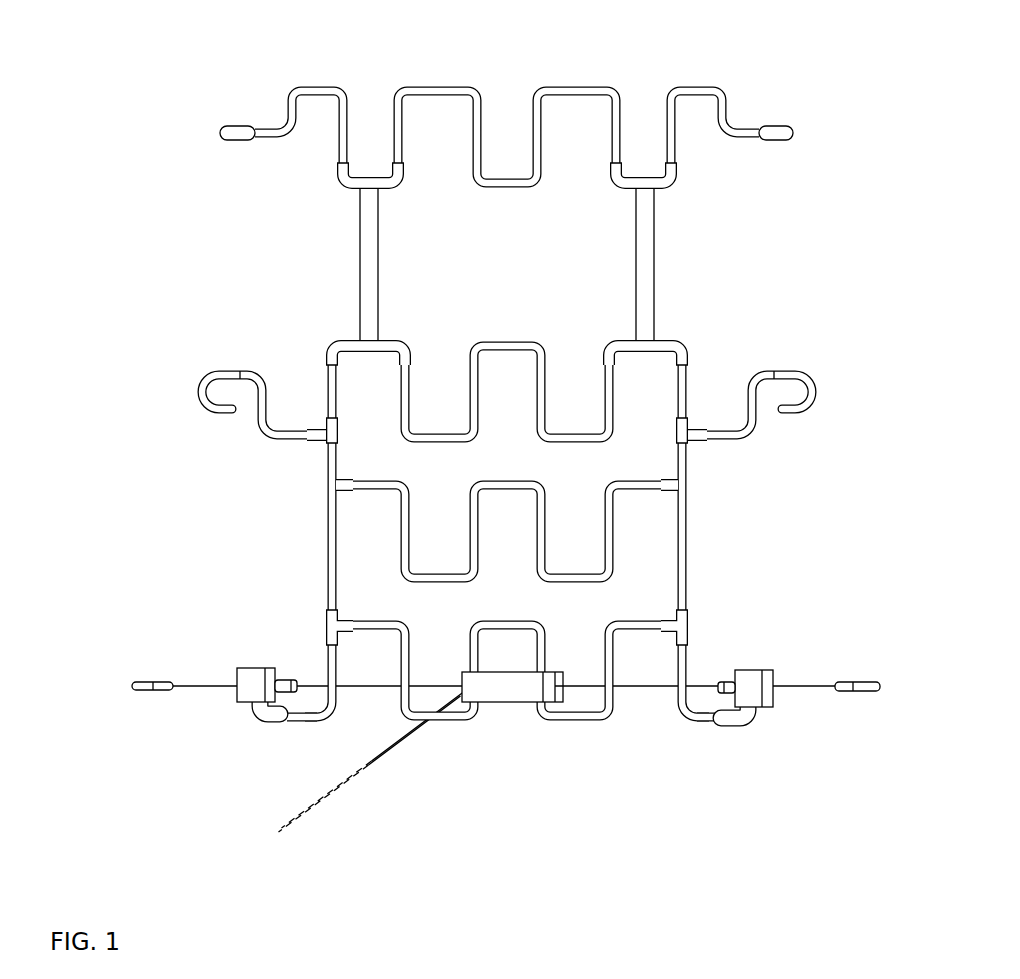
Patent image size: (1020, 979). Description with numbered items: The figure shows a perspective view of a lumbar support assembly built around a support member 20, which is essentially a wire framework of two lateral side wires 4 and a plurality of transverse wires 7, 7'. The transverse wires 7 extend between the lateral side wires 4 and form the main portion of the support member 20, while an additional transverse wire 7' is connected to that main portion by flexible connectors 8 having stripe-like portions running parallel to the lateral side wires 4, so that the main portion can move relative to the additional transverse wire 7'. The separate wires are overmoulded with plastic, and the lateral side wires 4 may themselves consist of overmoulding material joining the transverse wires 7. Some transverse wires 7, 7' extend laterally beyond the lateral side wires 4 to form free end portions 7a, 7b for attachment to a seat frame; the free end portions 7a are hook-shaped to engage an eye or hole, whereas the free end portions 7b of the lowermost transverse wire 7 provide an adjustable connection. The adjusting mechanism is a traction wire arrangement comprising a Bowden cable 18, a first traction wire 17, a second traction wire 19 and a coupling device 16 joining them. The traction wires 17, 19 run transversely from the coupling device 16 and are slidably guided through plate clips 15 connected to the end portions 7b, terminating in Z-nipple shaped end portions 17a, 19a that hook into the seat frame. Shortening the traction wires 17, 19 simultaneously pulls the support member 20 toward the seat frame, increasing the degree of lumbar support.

The support member 20 is at (160, 216).
The additional transverse wire 7' is at (507, 94).
The transverse wires 7 is at (507, 483).
The free end portions 7a is at (232, 132).
The free end portions 7b is at (312, 714).
The flexible connectors 8 is at (368, 256).
The lateral side wires 4 is at (331, 557).
The plate clips 15 is at (271, 716).
The coupling device 16 is at (522, 695).
The first traction wire 17 is at (373, 686).
The end portion 17a is at (154, 685).
The Bowden cable 18 is at (407, 735).
The second traction wire 19 is at (645, 687).
The end portion 19a is at (853, 688).